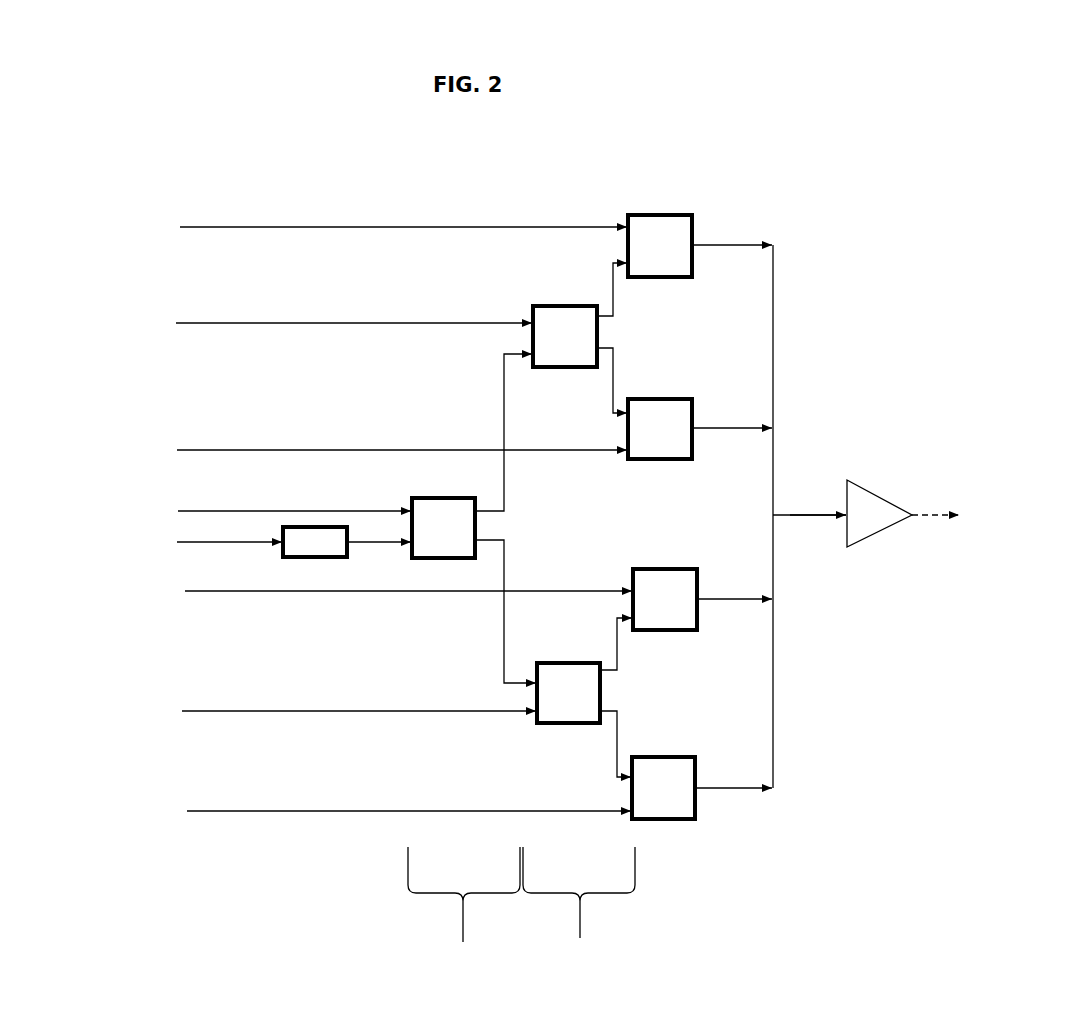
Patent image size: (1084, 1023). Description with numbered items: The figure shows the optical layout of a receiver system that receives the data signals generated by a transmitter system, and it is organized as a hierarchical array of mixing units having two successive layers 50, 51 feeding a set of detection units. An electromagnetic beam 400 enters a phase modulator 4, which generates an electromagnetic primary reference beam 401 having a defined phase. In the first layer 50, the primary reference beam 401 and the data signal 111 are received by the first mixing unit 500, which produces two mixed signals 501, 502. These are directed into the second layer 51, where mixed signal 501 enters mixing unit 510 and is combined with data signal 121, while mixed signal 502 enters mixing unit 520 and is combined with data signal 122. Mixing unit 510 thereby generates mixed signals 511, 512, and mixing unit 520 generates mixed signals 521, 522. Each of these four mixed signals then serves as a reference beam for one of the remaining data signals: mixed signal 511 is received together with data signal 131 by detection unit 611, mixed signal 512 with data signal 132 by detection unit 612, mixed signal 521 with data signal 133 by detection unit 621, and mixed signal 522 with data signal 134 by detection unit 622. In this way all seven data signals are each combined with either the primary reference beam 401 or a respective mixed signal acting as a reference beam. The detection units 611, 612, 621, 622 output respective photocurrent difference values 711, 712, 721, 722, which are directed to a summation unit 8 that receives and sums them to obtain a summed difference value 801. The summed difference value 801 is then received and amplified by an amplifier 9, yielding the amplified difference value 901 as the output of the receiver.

The data signal 131 is at (195, 228).
The data signal 121 is at (260, 323).
The data signal 132 is at (275, 448).
The data signal 111 is at (232, 505).
The electromagnetic beam 400 is at (202, 542).
The data signal 133 is at (313, 592).
The data signal 122 is at (200, 712).
The data signal 134 is at (232, 815).
The phase modulator 4 is at (315, 542).
The electromagnetic primary reference beam 401 is at (373, 543).
The first mixing unit 500 is at (443, 528).
The mixed signal 501 is at (500, 510).
The mixed signal 502 is at (503, 543).
The mixing unit 510 is at (565, 336).
The mixed signal 511 is at (612, 310).
The mixed signal 512 is at (613, 353).
The mixing unit 520 is at (568, 693).
The mixed signal 521 is at (618, 670).
The mixed signal 522 is at (615, 711).
The detection unit 611 is at (660, 246).
The detection unit 612 is at (660, 429).
The detection unit 621 is at (665, 599).
The detection unit 622 is at (663, 788).
The difference value 711 is at (728, 253).
The difference value 712 is at (730, 427).
The difference value 721 is at (737, 598).
The difference value 722 is at (740, 795).
The summation unit 8 is at (773, 515).
The summed difference value 801 is at (815, 515).
The amplifier 9 is at (879, 513).
The amplified difference value 901 is at (945, 498).
The first layer 50 is at (464, 918).
The second layer 51 is at (579, 918).